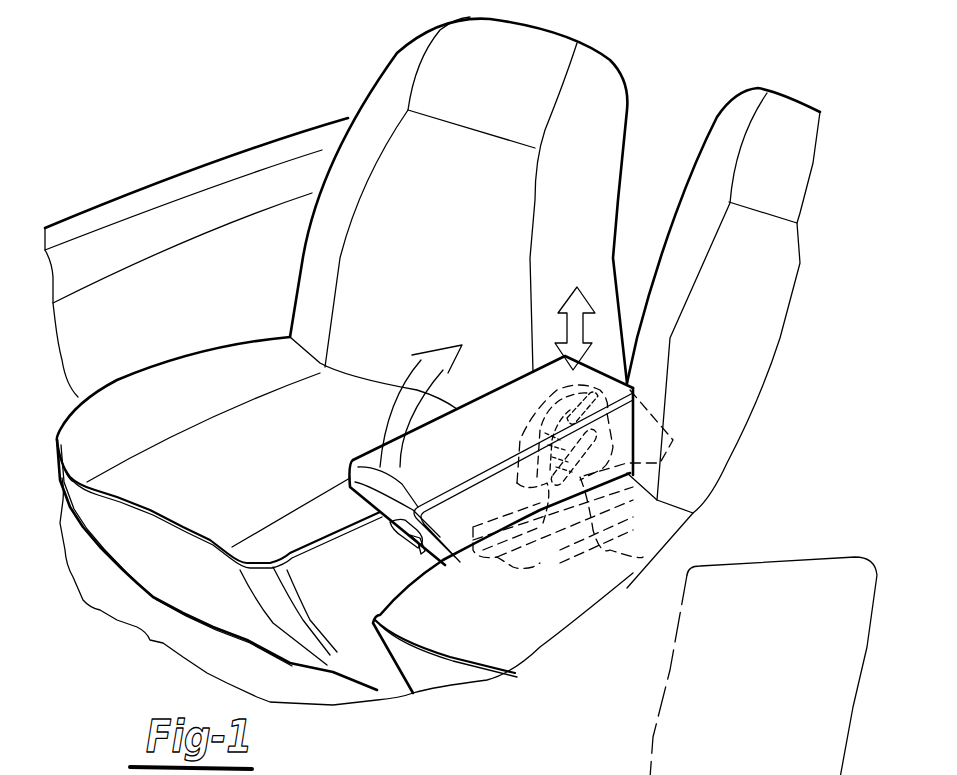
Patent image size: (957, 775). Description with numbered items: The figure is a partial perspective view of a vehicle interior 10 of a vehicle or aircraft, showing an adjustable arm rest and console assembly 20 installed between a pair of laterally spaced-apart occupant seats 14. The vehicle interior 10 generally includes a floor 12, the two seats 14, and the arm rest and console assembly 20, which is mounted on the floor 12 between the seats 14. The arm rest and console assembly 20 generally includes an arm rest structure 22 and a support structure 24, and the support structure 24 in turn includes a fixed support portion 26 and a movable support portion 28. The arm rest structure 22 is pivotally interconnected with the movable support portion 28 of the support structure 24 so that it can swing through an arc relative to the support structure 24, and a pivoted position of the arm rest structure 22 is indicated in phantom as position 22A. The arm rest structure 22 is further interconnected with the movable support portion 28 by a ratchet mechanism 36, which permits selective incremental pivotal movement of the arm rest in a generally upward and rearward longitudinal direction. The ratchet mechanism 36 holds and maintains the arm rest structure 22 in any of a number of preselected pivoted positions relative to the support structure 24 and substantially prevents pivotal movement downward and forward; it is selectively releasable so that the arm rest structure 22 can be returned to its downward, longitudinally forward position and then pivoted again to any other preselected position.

The vehicle interior 10 is at (207, 165).
The floor 12 is at (142, 622).
The occupant seats 14 is at (507, 63).
The arm rest and console assembly 20 is at (612, 362).
The arm rest structure 22 is at (381, 537).
The pivoted position of arm rest structure 22A is at (868, 653).
The support structure 24 is at (560, 527).
The fixed support portion 26 is at (643, 557).
The movable support portion 28 is at (503, 563).
The ratchet mechanism 36 is at (603, 433).